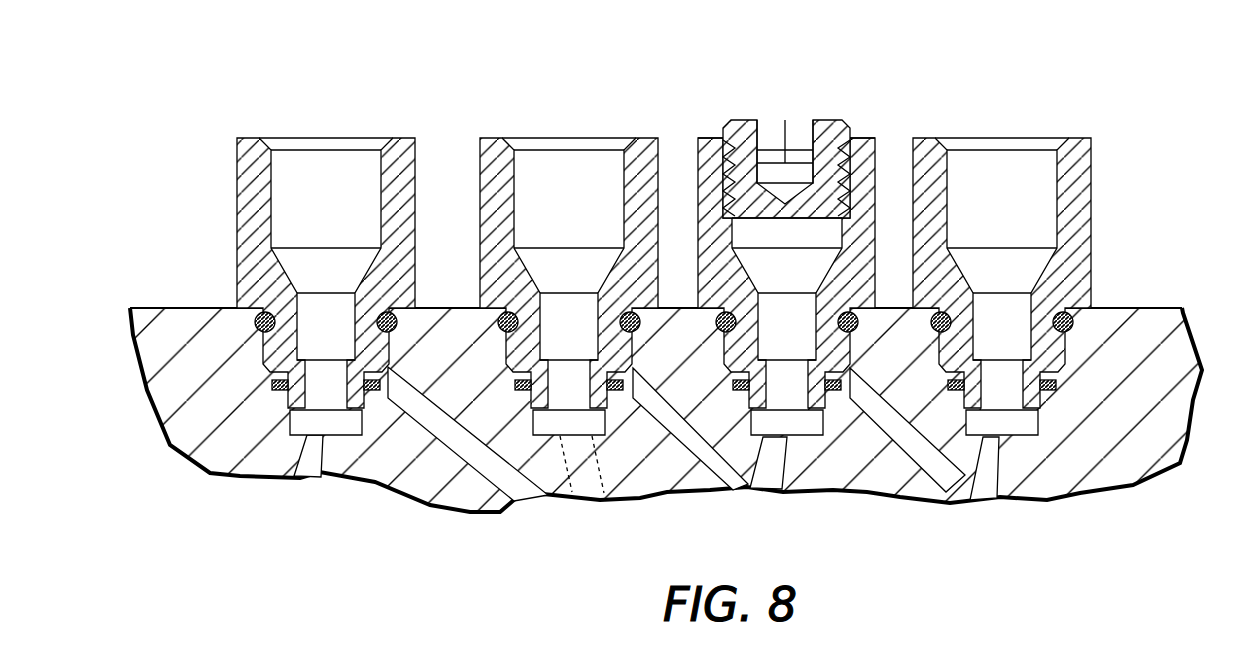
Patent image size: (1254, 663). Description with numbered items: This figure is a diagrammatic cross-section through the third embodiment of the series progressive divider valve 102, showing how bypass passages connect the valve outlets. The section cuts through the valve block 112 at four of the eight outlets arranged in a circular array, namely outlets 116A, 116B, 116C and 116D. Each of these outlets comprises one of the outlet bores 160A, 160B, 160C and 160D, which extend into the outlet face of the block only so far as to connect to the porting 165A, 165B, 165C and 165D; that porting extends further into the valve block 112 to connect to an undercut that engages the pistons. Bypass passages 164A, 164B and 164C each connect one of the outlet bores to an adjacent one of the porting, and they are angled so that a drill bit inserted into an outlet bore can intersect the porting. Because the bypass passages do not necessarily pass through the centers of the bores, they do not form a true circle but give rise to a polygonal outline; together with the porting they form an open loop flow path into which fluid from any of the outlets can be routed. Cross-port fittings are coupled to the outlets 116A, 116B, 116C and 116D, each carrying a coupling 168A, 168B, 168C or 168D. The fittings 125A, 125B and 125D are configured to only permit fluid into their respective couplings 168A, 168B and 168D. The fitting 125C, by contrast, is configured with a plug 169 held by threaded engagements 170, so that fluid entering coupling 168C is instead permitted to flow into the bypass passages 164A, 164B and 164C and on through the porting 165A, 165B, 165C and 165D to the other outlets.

The series progressive divider valve 102 is at (671, 315).
The valve block 112 is at (1143, 424).
The outlet 116A is at (291, 300).
The outlet 116B is at (534, 302).
The outlet 116C is at (750, 302).
The outlet 116D is at (962, 300).
The fitting 125A is at (310, 102).
The fitting 125B is at (555, 103).
The fitting 125C is at (779, 97).
The fitting 125D is at (983, 103).
The outlet bore 160A is at (344, 477).
The outlet bore 160B is at (596, 478).
The outlet bore 160C is at (800, 479).
The outlet bore 160D is at (1018, 477).
The bypass passage 164A is at (438, 433).
The bypass passage 164B is at (681, 441).
The bypass passage 164C is at (907, 433).
The porting 165A is at (307, 457).
The porting 165B is at (577, 486).
The porting 165C is at (751, 458).
The porting 165D is at (975, 471).
The coupling 168A is at (326, 304).
The coupling 168B is at (569, 304).
The coupling 168C is at (787, 289).
The coupling 168D is at (1002, 304).
The plug 169 is at (756, 154).
The threaded engagements 170 is at (756, 196).